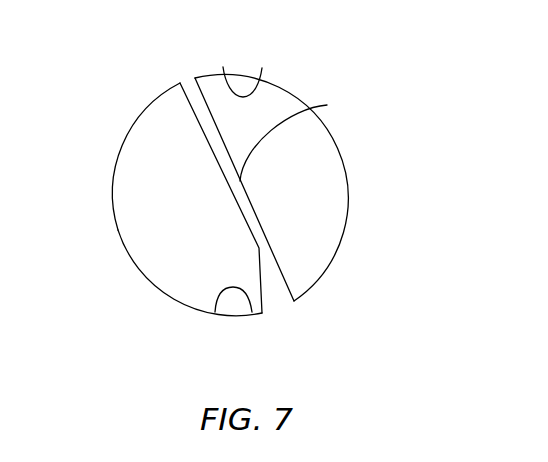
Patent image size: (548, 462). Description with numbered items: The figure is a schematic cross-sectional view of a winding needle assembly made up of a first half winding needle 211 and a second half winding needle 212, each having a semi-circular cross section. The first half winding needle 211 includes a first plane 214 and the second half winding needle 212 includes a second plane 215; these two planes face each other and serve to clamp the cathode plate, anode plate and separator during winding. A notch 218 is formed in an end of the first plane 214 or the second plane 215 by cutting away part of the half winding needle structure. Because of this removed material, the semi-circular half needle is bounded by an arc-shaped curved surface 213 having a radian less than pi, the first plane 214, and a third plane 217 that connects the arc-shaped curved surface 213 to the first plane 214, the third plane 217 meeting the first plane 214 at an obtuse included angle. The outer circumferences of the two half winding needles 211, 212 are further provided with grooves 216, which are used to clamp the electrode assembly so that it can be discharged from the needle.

The first half winding needle 211 is at (155, 212).
The second half winding needle 212 is at (328, 184).
The arc-shaped curved surface 213 is at (156, 284).
The first plane 214 is at (218, 167).
The second plane 215 is at (327, 105).
The grooves 216 is at (243, 93).
The third plane 217 is at (265, 300).
The notch 218 is at (263, 282).